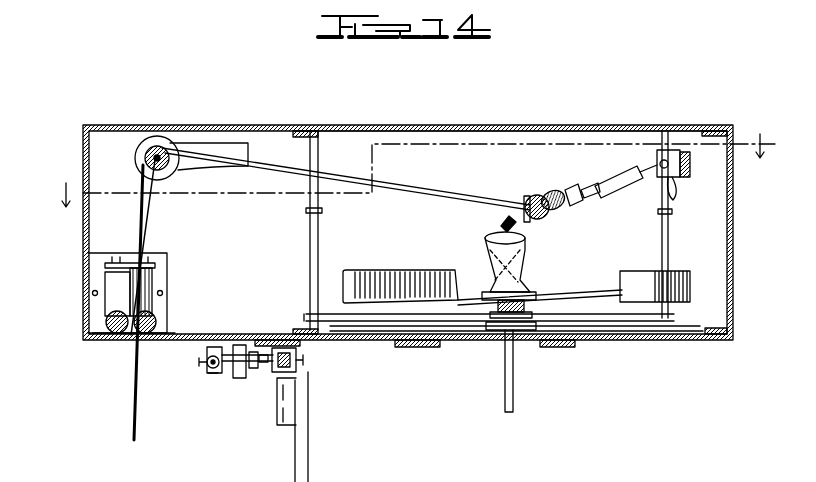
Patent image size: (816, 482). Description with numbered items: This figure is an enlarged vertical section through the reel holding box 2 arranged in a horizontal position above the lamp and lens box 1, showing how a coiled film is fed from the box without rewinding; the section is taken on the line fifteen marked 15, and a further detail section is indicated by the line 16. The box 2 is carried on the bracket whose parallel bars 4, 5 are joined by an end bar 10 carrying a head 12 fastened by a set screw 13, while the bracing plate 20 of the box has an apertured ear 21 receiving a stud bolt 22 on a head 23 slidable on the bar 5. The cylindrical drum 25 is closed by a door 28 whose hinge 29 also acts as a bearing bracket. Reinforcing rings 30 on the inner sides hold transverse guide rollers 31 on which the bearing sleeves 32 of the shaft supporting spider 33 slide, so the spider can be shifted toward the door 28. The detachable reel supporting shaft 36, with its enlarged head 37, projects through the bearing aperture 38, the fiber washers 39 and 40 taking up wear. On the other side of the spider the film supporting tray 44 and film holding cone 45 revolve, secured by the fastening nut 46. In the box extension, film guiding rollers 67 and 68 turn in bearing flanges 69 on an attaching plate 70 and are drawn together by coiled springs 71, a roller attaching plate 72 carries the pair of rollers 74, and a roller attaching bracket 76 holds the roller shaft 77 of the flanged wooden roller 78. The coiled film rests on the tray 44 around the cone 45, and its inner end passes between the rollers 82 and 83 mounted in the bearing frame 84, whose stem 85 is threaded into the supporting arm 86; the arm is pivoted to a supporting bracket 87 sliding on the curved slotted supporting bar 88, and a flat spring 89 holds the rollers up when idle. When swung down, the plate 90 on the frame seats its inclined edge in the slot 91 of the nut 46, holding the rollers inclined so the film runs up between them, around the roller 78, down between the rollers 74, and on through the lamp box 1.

The lamp and lens box 1 is at (316, 442).
The reel holding box 2 is at (451, 125).
The bar 4 is at (296, 362).
The bar 5 is at (226, 366).
The end bar 10 is at (263, 367).
The head 12 is at (212, 347).
The set screw 13 is at (200, 364).
The section line 15 is at (418, 169).
The section line 16 is at (285, 420).
The bracing plate 20 is at (280, 340).
The apertured ear 21 is at (240, 378).
The stud bolt 22 is at (252, 370).
The head 23 is at (216, 375).
The drum 25 is at (572, 125).
The door 28 is at (672, 340).
The hinge 29 is at (560, 342).
The reinforcing rings 30 is at (305, 131).
The guide rollers 31 is at (308, 211).
The bearing sleeves 32 is at (318, 240).
The shaft supporting spider 33 is at (412, 322).
The reel supporting shaft 36 is at (514, 400).
The enlarged head 37 is at (470, 300).
The bearing aperture 38 is at (500, 320).
The fiber washer 39 is at (466, 342).
The fiber washer 40 is at (550, 347).
The film supporting tray 44 is at (352, 272).
The film holding cone 45 is at (485, 253).
The cone and tray fastening nut 46 is at (532, 250).
The film guiding roller 67 is at (150, 290).
The film guiding roller 68 is at (110, 296).
The bearing flanges 69 is at (160, 268).
The attaching plate 70 is at (100, 268).
The coiled springs 71 is at (136, 262).
The roller attaching plate 72 is at (88, 340).
The film guiding rollers 74 is at (130, 340).
The roller attaching bracket 76 is at (230, 150).
The roller shaft 77 is at (162, 148).
The flanged film guiding roller 78 is at (150, 140).
The film guiding roller 82 is at (534, 196).
The film guiding roller 83 is at (551, 191).
The bearing frame 84 is at (576, 208).
The stem 85 is at (591, 187).
The supporting arm 86 is at (620, 190).
The supporting bracket 87 is at (670, 150).
The supporting bar 88 is at (690, 172).
The flat spring 89 is at (678, 198).
The plate 90 is at (502, 225).
The slot 91 is at (524, 216).